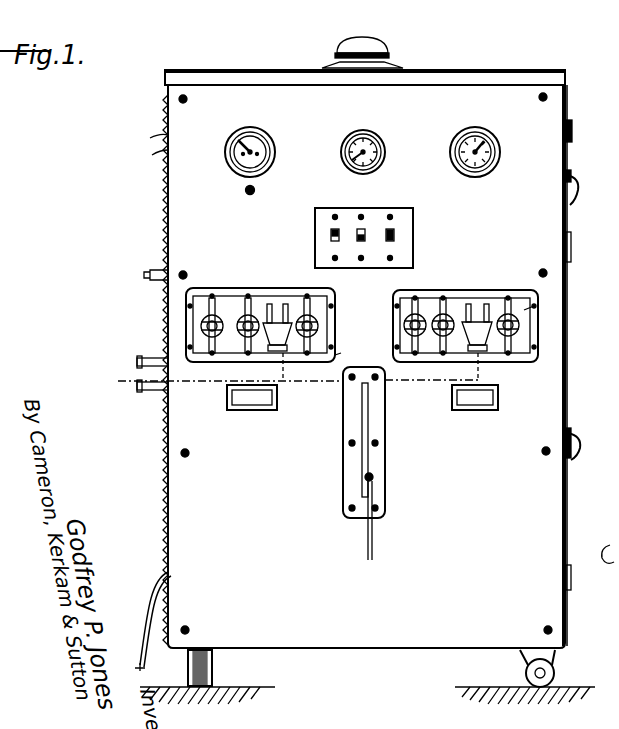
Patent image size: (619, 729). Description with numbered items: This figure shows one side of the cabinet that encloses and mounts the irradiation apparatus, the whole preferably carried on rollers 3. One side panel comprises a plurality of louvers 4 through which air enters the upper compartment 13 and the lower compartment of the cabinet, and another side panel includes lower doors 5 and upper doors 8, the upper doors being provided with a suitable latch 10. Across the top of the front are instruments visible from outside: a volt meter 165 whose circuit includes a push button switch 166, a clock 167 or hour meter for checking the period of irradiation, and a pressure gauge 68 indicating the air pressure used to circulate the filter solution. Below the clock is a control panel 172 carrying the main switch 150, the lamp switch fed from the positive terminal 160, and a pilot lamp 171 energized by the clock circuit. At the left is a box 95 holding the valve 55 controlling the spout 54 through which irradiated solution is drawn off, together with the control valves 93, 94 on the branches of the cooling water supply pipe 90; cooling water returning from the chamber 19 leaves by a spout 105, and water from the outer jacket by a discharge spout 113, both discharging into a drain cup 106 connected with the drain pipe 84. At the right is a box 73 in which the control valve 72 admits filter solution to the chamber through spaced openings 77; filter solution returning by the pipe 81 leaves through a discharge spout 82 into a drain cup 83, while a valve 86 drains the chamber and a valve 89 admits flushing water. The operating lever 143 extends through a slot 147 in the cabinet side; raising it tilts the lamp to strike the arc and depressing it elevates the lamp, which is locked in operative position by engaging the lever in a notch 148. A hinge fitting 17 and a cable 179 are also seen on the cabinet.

The rollers 3 is at (214, 670).
The louvers 4 is at (152, 143).
The lower doors 5 is at (568, 418).
The upper doors 8 is at (572, 150).
The latch 10 is at (578, 198).
The upper compartment 13 is at (540, 300).
The handle 17 is at (580, 455).
The chamber 19 is at (590, 549).
The spout 54 is at (205, 360).
The valve 55 is at (220, 318).
The pressure gauge 68 is at (500, 155).
The control valve 72 is at (450, 316).
The box 73 is at (372, 50).
The spaced openings 77 is at (447, 60).
The pipe 81 is at (482, 322).
The discharge spout 82 is at (470, 304).
The drain cup 83 is at (460, 317).
The drain pipe 84 is at (156, 391).
The valve 86 is at (519, 325).
The valve 89 is at (404, 325).
The supply pipe 90 is at (142, 356).
The control valve 93 is at (318, 322).
The control valve 94 is at (255, 318).
The box 95 is at (345, 346).
The spout 105 is at (283, 322).
The drain cup 106 is at (280, 340).
The discharge spout 113 is at (272, 304).
The operating lever 143 is at (367, 552).
The slot 147 is at (362, 428).
The notch 148 is at (365, 478).
The main switch 150 is at (396, 233).
The center tap 160 is at (331, 236).
The volt meter 165 is at (266, 139).
The push button switch 166 is at (255, 188).
The clock 167 is at (379, 139).
The pilot lamp 171 is at (365, 229).
The control panel 172 is at (366, 228).
The cable 179 is at (147, 620).